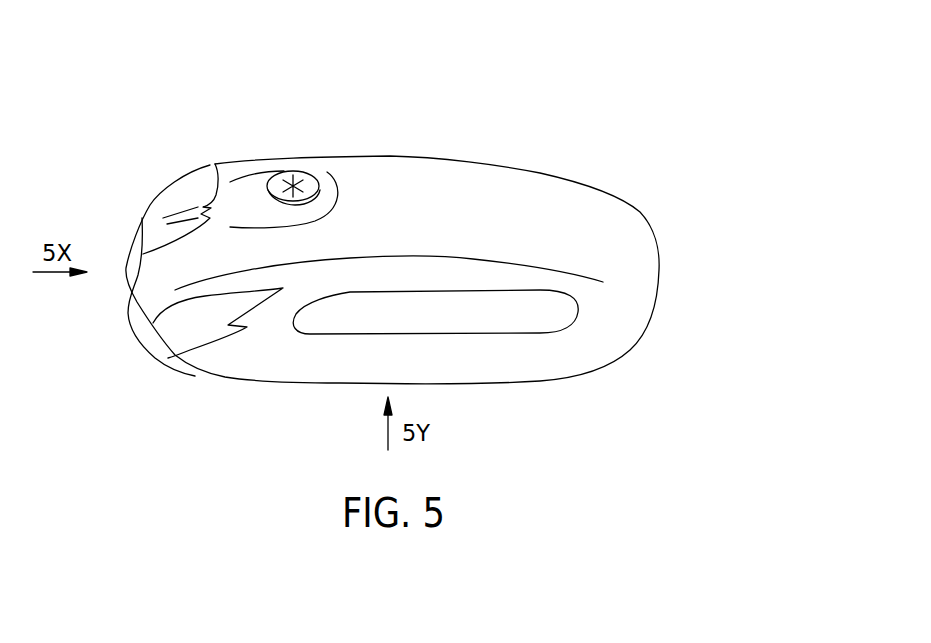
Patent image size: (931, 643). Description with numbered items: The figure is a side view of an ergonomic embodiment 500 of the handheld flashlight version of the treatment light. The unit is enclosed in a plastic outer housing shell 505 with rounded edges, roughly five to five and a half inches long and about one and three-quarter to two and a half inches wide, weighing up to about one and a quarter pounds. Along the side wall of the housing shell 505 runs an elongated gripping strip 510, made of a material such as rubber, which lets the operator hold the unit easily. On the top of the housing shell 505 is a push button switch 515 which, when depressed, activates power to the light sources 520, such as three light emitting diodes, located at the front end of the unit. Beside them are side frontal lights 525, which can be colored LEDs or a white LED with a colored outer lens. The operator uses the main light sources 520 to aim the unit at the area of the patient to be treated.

The ergonomic embodiment 500 is at (612, 103).
The outer housing shell 505 is at (443, 174).
The elongated gripping strips 510 is at (538, 322).
The push button switch 515 is at (292, 182).
The light sources 520 is at (137, 317).
The side frontal lights 525 is at (183, 335).